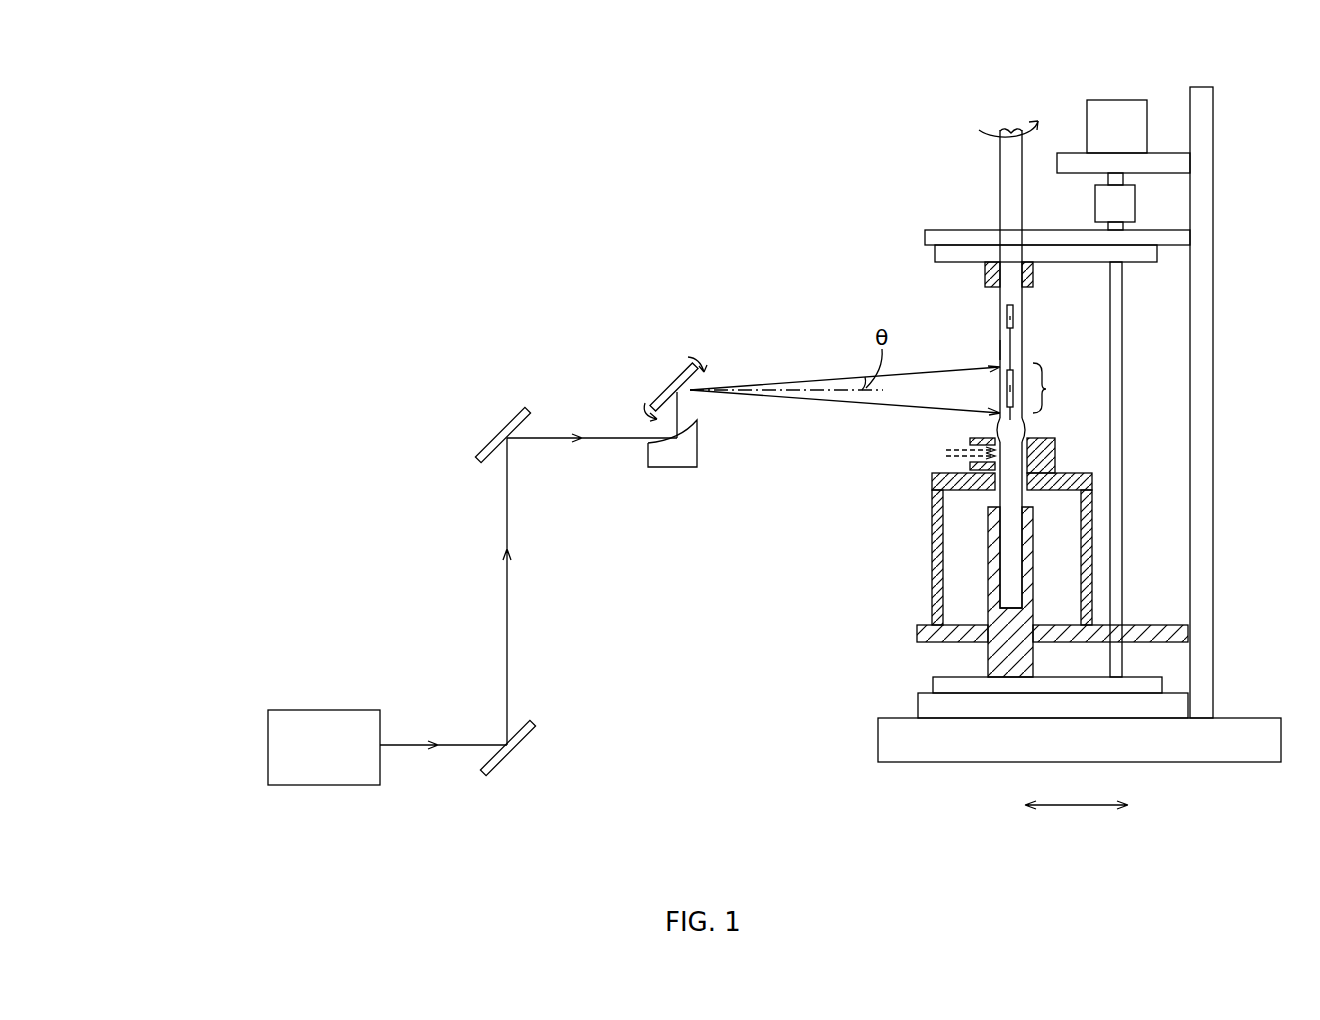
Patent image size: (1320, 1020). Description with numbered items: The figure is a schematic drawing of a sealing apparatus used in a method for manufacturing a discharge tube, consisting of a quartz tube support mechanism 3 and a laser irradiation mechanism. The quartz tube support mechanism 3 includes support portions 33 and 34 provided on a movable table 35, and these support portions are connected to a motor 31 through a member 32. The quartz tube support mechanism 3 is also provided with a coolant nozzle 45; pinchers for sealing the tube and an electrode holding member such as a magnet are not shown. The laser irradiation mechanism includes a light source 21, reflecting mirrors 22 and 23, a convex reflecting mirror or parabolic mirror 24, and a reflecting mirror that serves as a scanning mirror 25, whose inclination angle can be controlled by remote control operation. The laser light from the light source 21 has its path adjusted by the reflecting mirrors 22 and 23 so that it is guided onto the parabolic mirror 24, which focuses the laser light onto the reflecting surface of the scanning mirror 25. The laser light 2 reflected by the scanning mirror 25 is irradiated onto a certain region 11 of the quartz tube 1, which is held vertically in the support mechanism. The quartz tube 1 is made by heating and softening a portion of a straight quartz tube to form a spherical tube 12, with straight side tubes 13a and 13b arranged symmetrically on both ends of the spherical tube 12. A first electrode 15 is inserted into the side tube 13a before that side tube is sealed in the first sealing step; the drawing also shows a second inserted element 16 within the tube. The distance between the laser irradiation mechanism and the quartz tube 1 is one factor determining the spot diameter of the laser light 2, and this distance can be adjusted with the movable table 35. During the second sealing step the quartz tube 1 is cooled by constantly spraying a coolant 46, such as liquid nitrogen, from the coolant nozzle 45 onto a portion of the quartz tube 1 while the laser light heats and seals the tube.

The quartz tube 1 is at (1000, 188).
The laser light 2 is at (837, 405).
The quartz tube support mechanism 3 is at (1214, 94).
The region of the quartz tube 11 is at (1054, 388).
The spherical tube 12 is at (1026, 431).
The side tube 13a is at (1000, 352).
The side tube 13b is at (1046, 460).
The first electrode 15 is at (1016, 367).
The optical fiber end 16 is at (1016, 321).
The light source 21 is at (328, 710).
The reflecting mirror 22 is at (511, 753).
The reflecting mirror 23 is at (497, 440).
The convex reflecting mirror (parabolic mirror) 24 is at (667, 467).
The reflecting mirror (scanning mirror) 25 is at (673, 392).
The motor 31 is at (1115, 122).
The member 32 is at (1121, 541).
The support portion 33 is at (985, 277).
The support portion 34 is at (988, 580).
The movable table 35 is at (1228, 741).
The coolant nozzle 45 is at (970, 464).
The coolant 46 is at (958, 447).